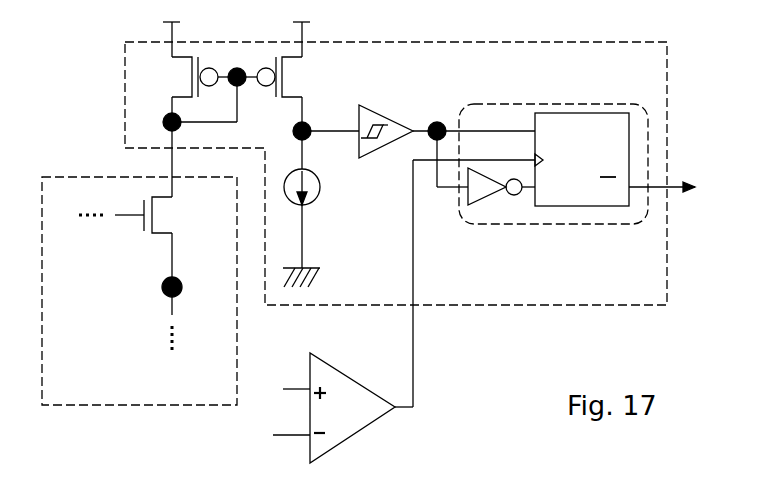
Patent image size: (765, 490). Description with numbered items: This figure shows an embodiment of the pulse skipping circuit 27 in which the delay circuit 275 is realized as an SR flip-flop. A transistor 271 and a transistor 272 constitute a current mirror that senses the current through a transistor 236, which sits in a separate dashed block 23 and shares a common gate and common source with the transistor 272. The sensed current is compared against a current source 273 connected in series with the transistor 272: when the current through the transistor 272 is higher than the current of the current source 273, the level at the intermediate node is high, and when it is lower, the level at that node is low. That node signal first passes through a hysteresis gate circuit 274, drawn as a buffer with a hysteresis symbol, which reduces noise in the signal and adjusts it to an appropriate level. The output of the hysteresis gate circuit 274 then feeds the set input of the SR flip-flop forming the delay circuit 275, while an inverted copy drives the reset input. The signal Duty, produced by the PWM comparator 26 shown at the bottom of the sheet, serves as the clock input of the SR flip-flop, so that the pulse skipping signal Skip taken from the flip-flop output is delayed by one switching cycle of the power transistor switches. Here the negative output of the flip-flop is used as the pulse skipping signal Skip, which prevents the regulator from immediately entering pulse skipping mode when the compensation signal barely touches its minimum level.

The pulse skipping circuit 27 is at (667, 98).
The driver circuit block 23 is at (88, 385).
The transistor 271 is at (189, 109).
The transistor 272 is at (291, 95).
The current source 273 is at (318, 178).
The hysteresis gate circuit 274 is at (394, 112).
The delay circuit 275 is at (565, 103).
The transistor 236 is at (146, 274).
The PWM comparator 26 is at (348, 382).